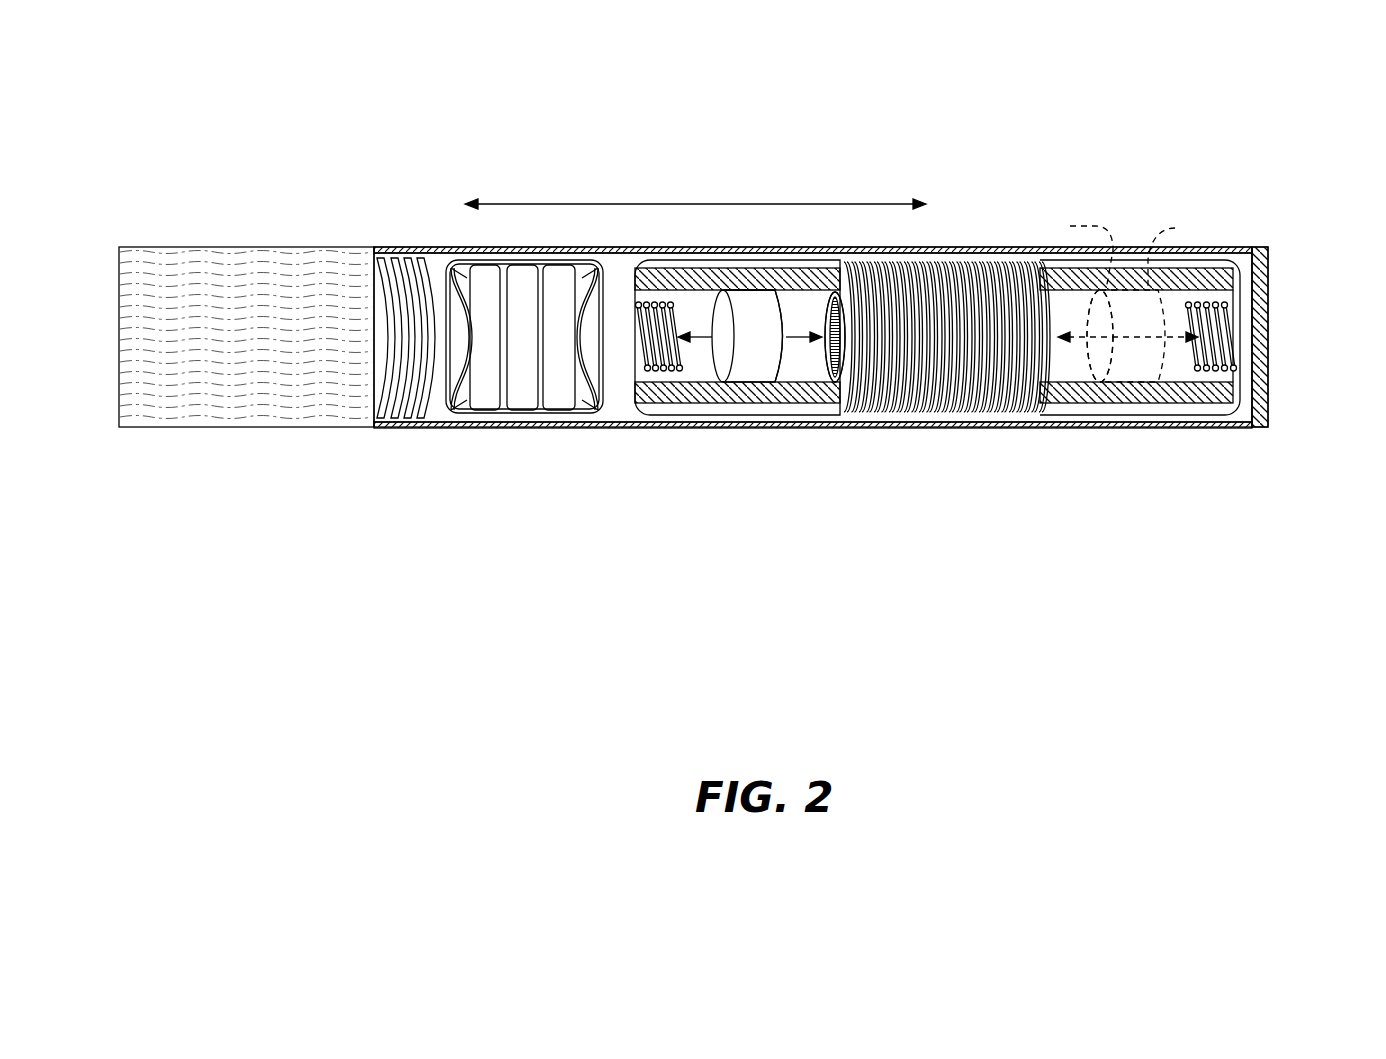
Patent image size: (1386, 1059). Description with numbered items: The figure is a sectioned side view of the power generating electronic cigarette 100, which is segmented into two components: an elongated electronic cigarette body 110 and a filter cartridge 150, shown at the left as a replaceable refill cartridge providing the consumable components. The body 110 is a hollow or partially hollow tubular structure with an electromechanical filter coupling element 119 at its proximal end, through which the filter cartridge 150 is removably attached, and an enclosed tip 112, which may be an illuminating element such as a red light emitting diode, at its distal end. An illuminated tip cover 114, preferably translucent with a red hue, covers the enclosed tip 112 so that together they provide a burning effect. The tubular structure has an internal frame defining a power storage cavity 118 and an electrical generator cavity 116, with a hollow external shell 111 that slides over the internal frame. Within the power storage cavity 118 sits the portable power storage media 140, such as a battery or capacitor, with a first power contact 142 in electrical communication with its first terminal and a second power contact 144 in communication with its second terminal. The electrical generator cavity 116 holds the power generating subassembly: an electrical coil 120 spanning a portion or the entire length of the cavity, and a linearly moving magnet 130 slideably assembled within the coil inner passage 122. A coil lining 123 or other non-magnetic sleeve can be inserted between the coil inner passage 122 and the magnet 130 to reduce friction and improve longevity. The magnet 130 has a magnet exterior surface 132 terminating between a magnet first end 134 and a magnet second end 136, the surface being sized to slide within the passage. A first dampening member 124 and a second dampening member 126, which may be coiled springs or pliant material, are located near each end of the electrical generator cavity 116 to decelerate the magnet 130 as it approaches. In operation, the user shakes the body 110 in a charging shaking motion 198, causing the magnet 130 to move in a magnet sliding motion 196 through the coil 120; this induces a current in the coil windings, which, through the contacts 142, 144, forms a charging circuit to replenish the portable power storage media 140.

The power generating electronic cigarette 100 is at (273, 106).
The elongated electronic cigarette body 110 is at (613, 405).
The hollow external shell 111 is at (977, 424).
The enclosed tip 112 is at (1260, 247).
The illuminated tip cover 114 is at (1268, 398).
The electrical generator cavity 116 is at (1063, 367).
The power storage cavity 118 is at (457, 405).
The electromechanical filter coupling element 119 is at (400, 428).
The electrical coil 120 is at (932, 417).
The coil inner passage 122 is at (832, 365).
The coil lining 123 is at (828, 390).
The first dampening member 124 is at (683, 318).
The second dampening member 126 is at (1187, 363).
The linearly moving magnet 130 is at (762, 385).
The magnet exterior surface 132 is at (763, 307).
The magnet first end 134 is at (723, 358).
The magnet second end 136 is at (787, 322).
The portable power storage media 140 is at (525, 383).
The first power contact 142 is at (470, 258).
The second power contact 144 is at (578, 260).
The filter cartridge 150 is at (210, 398).
The magnet sliding motion 196 is at (1069, 298).
The charging shaking motion 198 is at (693, 204).